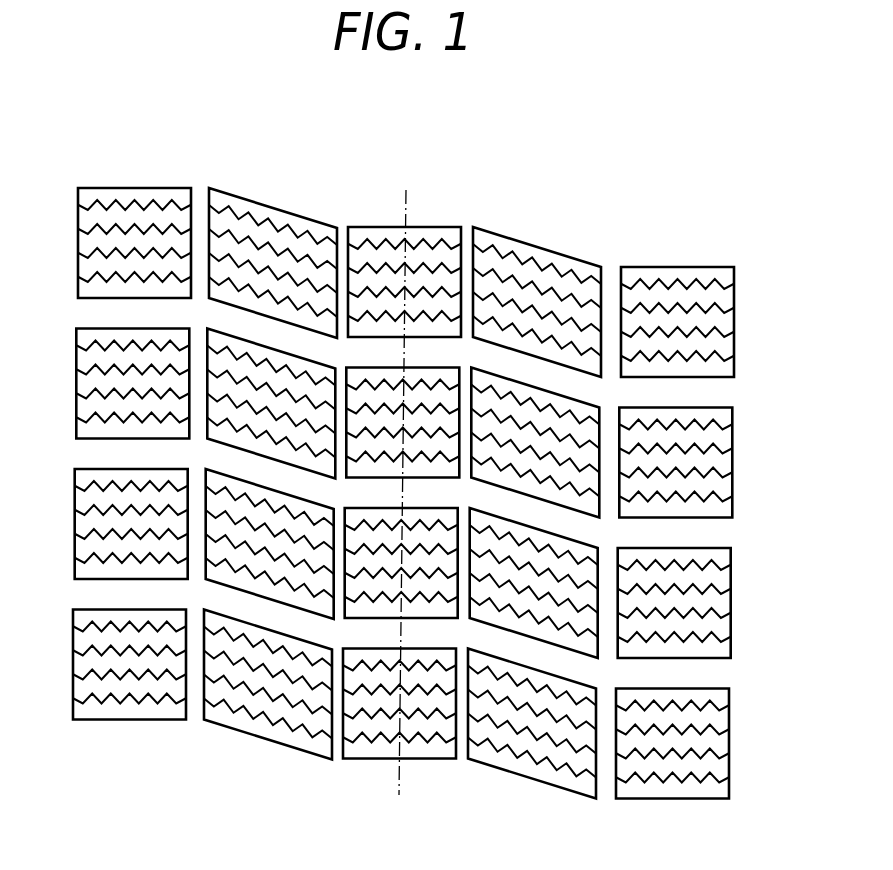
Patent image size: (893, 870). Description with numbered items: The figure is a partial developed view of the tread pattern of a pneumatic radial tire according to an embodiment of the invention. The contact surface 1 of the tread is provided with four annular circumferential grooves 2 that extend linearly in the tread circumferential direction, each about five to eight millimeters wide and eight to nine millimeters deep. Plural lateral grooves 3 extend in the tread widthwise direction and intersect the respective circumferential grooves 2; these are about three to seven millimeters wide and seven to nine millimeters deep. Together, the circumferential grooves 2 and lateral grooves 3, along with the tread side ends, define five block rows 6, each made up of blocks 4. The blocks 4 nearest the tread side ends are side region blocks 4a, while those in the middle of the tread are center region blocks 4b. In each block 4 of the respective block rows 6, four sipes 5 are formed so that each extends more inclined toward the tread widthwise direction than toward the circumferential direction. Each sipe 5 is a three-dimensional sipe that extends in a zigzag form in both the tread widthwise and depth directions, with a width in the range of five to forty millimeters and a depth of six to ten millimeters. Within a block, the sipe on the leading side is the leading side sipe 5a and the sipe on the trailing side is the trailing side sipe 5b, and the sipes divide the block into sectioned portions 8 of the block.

The contact surface of tread 1 is at (529, 239).
The circumferential groove 2 is at (198, 208).
The lateral groove 3 is at (698, 392).
The block 4 is at (85, 523).
The side region block 4a is at (105, 188).
The center region block 4b is at (367, 227).
The sipe 5 is at (280, 505).
The leading side sipe 5a is at (422, 243).
The trailing side sipe 5b is at (436, 330).
The block row 6 is at (128, 710).
The sectioned portions of block 8 is at (88, 243).